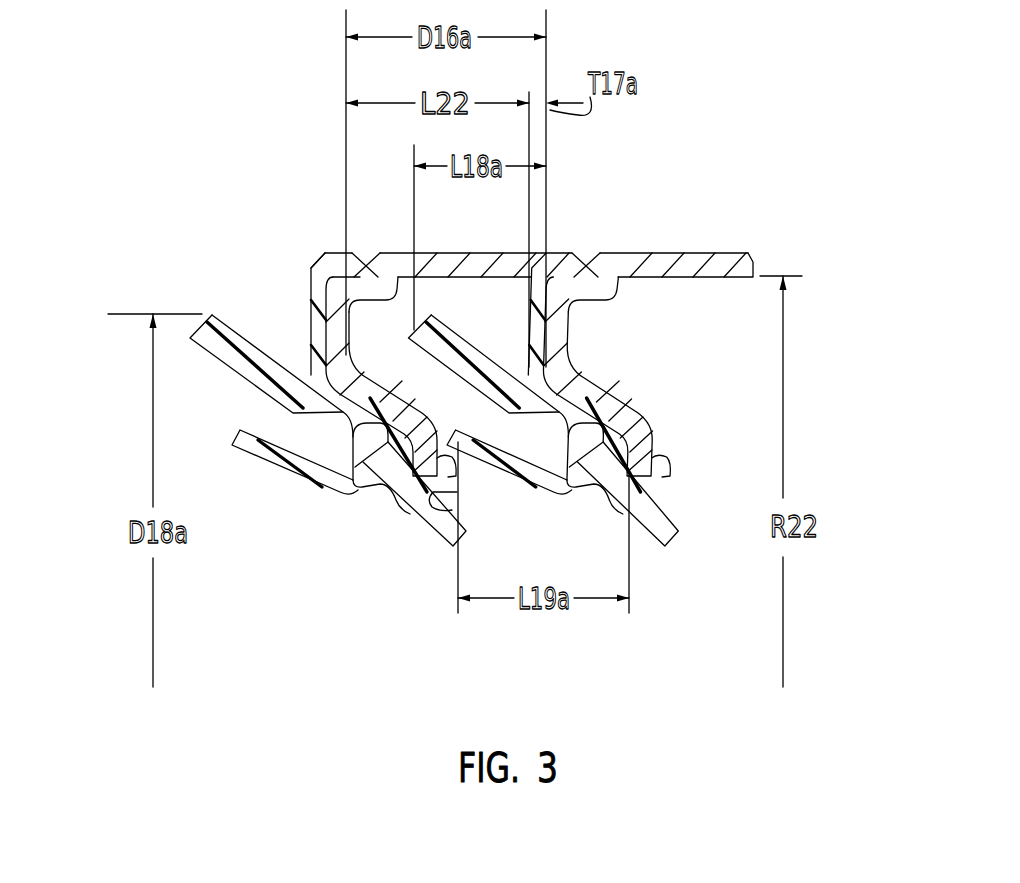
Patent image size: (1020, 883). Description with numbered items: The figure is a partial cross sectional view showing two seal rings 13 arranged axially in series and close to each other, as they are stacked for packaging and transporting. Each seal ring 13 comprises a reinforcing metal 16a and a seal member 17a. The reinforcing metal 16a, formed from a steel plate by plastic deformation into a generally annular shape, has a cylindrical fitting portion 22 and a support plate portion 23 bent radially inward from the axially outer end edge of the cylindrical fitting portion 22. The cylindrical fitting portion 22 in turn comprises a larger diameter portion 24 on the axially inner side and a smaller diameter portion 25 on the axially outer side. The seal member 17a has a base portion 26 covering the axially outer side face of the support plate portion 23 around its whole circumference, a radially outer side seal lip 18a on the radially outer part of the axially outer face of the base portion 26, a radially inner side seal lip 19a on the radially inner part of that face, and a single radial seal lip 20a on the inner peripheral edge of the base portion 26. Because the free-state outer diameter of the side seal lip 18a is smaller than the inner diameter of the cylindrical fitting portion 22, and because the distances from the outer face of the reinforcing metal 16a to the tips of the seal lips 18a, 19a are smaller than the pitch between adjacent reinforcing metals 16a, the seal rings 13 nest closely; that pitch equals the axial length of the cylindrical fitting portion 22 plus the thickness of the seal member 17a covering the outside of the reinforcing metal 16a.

The seal ring 13 is at (486, 367).
The reinforcing metal 16a is at (463, 420).
The seal member 17a is at (282, 386).
The side seal lip 18a is at (215, 312).
The side seal lip 19a is at (267, 458).
The radial seal lip 20a is at (433, 527).
The cylindrical fitting portion 22 is at (384, 277).
The support plate portion 23 is at (330, 403).
The larger diameter portion 24 is at (487, 263).
The smaller diameter portion 25 is at (384, 285).
The base portion 26 is at (372, 420).